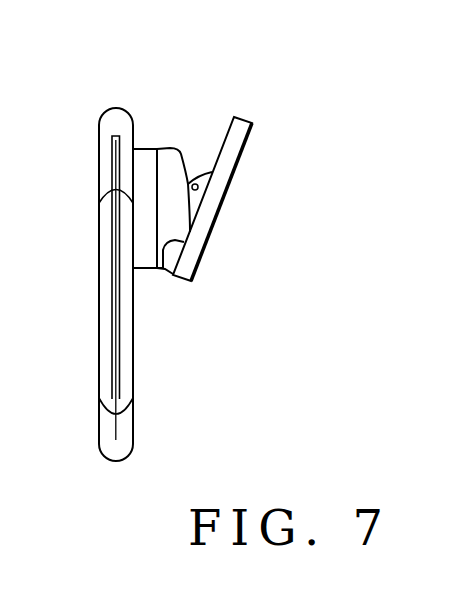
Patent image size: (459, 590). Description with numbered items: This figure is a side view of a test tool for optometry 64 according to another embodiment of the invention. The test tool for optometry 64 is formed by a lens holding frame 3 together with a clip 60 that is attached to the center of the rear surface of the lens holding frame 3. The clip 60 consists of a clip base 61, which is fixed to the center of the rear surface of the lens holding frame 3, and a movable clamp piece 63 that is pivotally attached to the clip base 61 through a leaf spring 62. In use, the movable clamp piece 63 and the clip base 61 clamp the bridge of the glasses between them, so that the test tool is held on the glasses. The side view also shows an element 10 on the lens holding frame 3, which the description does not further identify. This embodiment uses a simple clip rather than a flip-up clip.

The lens holding frame 3 is at (98, 147).
The shaft 10 is at (137, 357).
The clip 60 is at (220, 96).
The clip base 61 is at (143, 160).
The leaf spring 62 is at (173, 145).
The movable clamp piece 63 is at (228, 153).
The test tool for optometry 64 is at (92, 39).